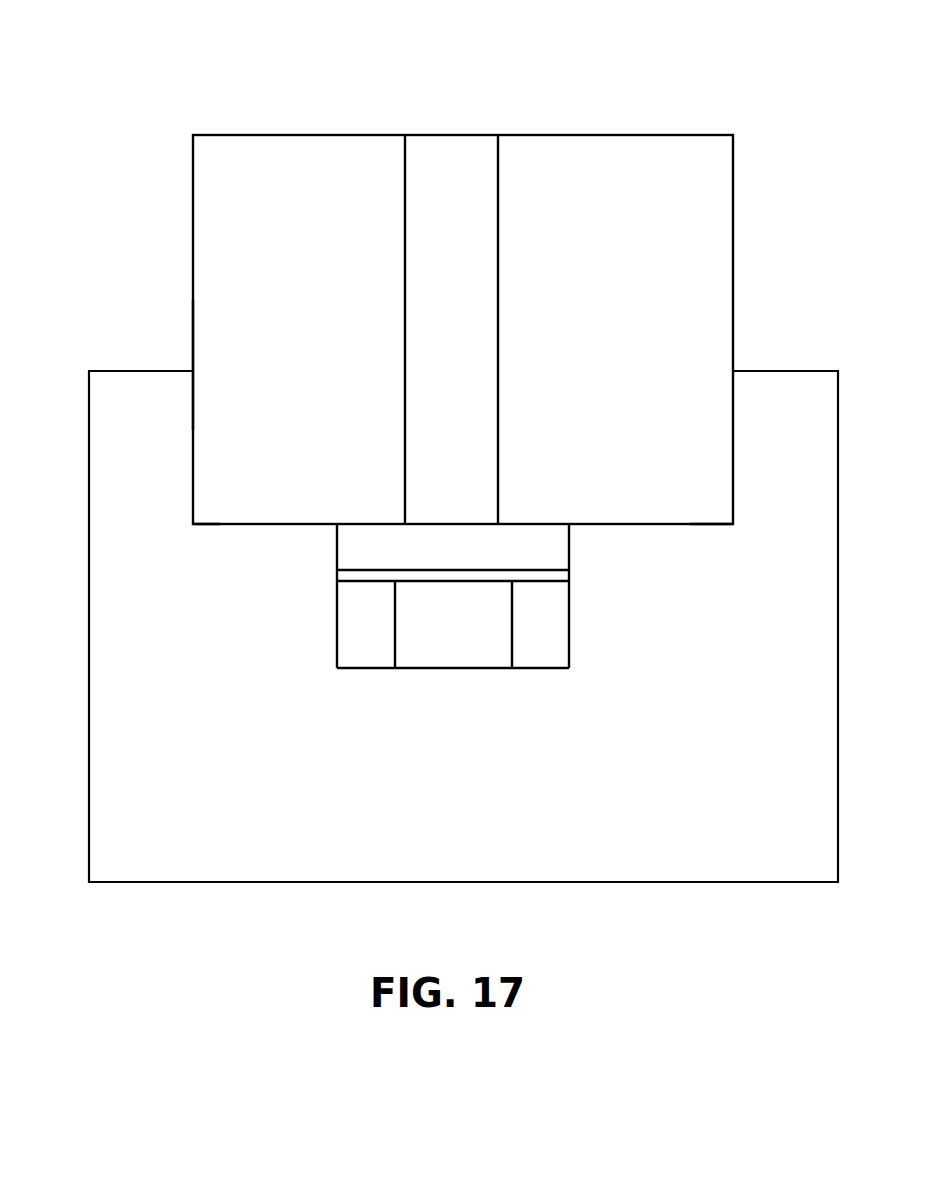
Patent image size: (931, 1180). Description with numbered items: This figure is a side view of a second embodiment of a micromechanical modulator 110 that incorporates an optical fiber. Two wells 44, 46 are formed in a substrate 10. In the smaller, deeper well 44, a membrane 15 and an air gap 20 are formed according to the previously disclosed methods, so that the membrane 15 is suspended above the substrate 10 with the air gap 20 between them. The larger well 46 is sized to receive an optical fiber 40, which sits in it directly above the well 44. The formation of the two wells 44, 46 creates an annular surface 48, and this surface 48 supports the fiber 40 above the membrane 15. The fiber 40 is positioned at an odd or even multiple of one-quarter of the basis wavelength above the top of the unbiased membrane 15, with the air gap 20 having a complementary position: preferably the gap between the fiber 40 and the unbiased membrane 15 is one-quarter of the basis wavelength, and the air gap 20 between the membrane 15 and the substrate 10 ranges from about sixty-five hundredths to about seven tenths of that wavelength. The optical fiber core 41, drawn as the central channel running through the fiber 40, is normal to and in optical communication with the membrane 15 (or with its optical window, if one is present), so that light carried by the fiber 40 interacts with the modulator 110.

The micromechanical modulator 110 is at (128, 68).
The substrate 10 is at (117, 458).
The optical fiber 40 is at (708, 183).
The optical fiber core 41 is at (453, 153).
The well 46 is at (193, 325).
The annular surface 48 is at (212, 525).
The well 44 is at (337, 543).
The membrane 15 is at (560, 575).
The air gap 20 is at (465, 650).